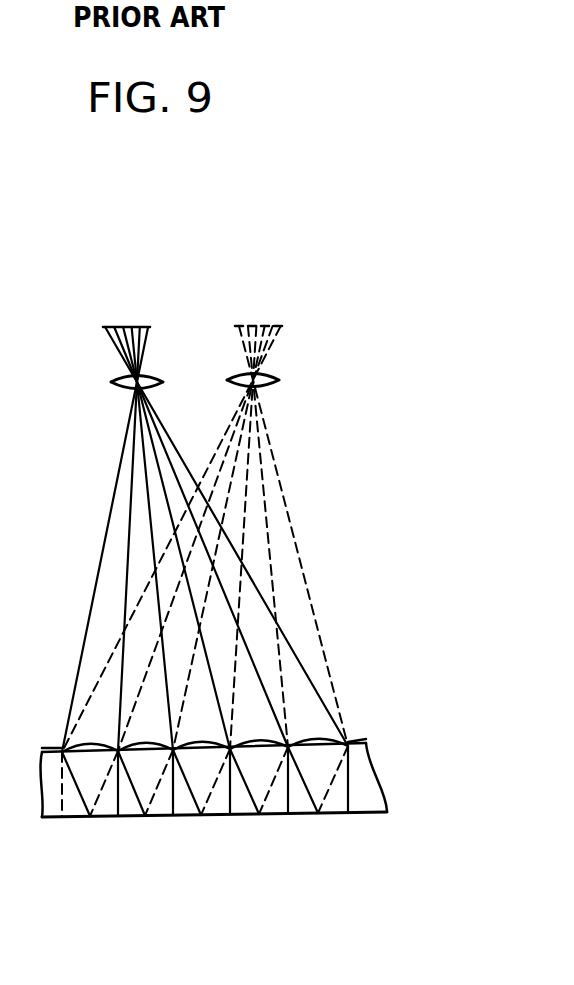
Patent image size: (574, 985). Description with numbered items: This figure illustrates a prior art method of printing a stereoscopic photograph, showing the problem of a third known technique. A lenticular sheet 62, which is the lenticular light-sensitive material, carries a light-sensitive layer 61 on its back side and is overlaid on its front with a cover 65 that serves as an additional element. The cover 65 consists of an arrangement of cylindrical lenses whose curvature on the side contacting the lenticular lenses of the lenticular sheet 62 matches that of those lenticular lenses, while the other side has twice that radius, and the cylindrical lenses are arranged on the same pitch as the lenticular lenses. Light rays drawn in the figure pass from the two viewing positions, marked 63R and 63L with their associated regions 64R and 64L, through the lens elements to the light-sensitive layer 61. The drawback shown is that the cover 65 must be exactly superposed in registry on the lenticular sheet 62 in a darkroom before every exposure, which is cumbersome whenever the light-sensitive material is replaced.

The light-sensitive layer 61 is at (371, 814).
The lenticular sheet 62 is at (365, 770).
The right eye lens 63R is at (116, 383).
The left eye lens 63L is at (280, 380).
The right eye retina 64R is at (124, 325).
The left eye retina 64L is at (263, 323).
The cover 65 is at (360, 742).